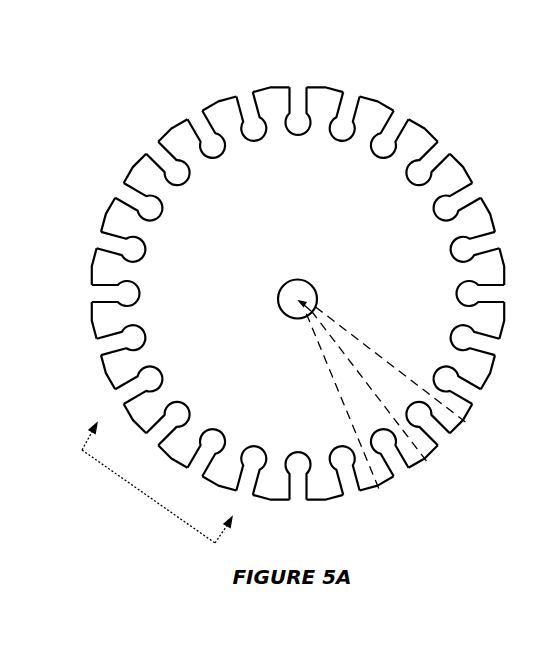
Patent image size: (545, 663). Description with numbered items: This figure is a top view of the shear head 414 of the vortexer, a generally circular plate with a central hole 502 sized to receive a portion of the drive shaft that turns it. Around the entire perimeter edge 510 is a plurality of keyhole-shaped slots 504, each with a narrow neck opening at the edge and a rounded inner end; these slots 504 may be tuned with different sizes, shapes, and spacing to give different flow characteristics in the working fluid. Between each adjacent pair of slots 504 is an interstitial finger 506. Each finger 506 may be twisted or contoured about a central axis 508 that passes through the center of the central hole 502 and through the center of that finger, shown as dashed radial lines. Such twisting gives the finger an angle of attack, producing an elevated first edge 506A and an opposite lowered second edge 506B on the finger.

The shear head 414 is at (126, 113).
The perimeter edge 510 is at (273, 88).
The central hole 502 is at (313, 287).
The keyhole-shaped slots 504 is at (400, 118).
The interstitial fingers 506 is at (133, 173).
The first edge 506A is at (171, 424).
The second edge 506B is at (200, 453).
The central axis 508 is at (472, 427).